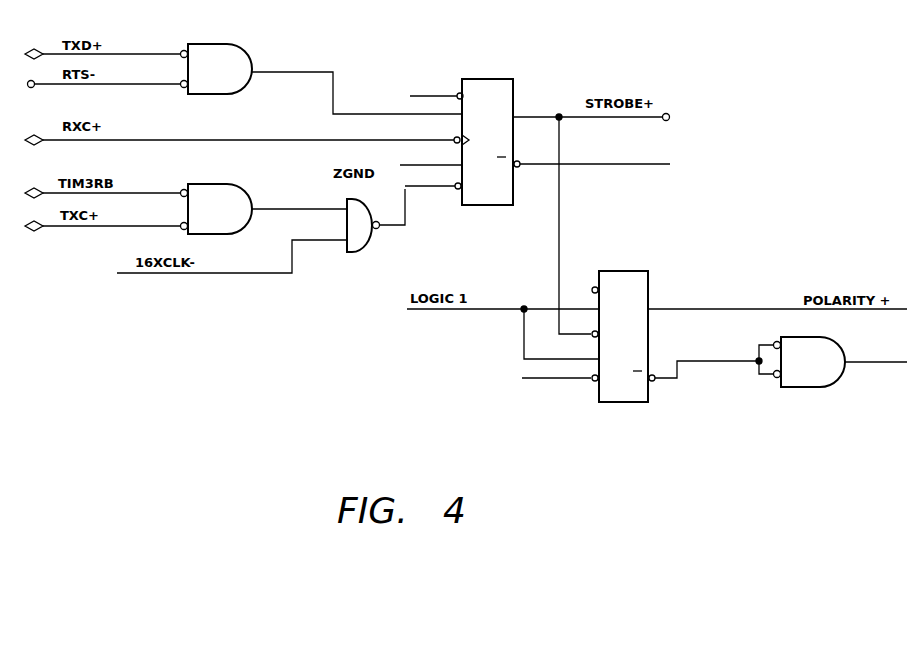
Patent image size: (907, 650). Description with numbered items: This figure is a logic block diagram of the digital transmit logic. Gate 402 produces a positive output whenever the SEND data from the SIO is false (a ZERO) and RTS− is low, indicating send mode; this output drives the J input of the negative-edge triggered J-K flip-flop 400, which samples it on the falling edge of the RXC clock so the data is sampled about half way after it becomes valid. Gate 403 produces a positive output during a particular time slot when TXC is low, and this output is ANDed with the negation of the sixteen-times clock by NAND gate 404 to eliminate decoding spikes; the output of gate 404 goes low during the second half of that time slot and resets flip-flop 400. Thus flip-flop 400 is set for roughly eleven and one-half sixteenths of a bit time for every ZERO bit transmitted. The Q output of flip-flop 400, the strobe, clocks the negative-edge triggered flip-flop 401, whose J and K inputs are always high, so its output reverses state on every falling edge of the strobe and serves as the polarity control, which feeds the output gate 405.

The flip-flop 400 is at (483, 79).
The flip-flop 401 is at (626, 271).
The gate 402 is at (218, 45).
The gate 403 is at (218, 185).
The NAND gate 404 is at (362, 247).
The AND gate 405 is at (812, 337).